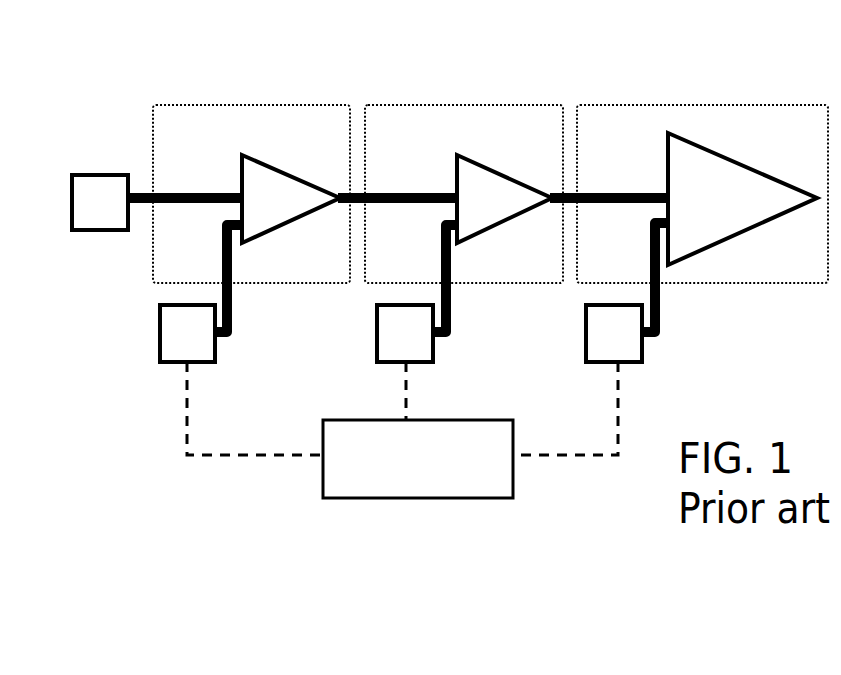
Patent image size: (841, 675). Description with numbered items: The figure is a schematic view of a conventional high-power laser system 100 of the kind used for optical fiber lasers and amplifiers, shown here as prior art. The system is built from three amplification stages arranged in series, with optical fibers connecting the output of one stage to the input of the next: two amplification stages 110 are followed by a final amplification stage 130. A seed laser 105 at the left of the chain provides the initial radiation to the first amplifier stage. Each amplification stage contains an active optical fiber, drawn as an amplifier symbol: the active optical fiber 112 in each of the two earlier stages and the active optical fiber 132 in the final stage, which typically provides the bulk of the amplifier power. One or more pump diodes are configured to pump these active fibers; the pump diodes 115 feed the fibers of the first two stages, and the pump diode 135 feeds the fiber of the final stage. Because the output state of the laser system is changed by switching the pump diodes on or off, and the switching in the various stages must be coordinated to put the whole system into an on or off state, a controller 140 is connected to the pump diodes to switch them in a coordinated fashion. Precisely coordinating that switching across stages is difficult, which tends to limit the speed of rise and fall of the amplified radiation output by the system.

The conventional high-power laser system 100 is at (138, 83).
The seed laser 105 is at (119, 216).
The amplification stage 110 is at (252, 105).
The active optical fiber 112 is at (293, 214).
The pump diode 115 is at (207, 347).
The final amplification stage 130 is at (707, 105).
The active optical fiber 132 is at (740, 215).
The pump diode 135 is at (633, 347).
The controller 140 is at (432, 477).